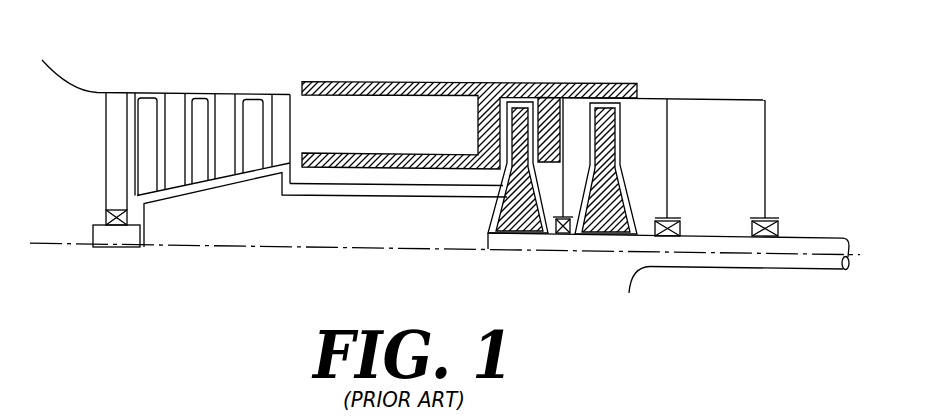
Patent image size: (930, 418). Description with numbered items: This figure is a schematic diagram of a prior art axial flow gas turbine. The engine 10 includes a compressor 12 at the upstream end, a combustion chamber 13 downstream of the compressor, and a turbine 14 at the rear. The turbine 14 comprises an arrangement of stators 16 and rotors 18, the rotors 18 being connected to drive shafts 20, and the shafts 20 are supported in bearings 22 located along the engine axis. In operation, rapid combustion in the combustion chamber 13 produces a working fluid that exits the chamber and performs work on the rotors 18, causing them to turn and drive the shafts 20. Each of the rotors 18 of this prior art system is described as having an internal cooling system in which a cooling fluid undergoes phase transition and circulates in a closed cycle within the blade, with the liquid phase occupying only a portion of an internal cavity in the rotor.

The engine 10 is at (440, 48).
The compressor 12 is at (197, 92).
The combustion chamber 13 is at (358, 134).
The turbine 14 is at (572, 63).
The stators 16 is at (478, 122).
The rotors 18 is at (620, 142).
The drive shafts 20 is at (432, 235).
The bearings 22 is at (128, 214).